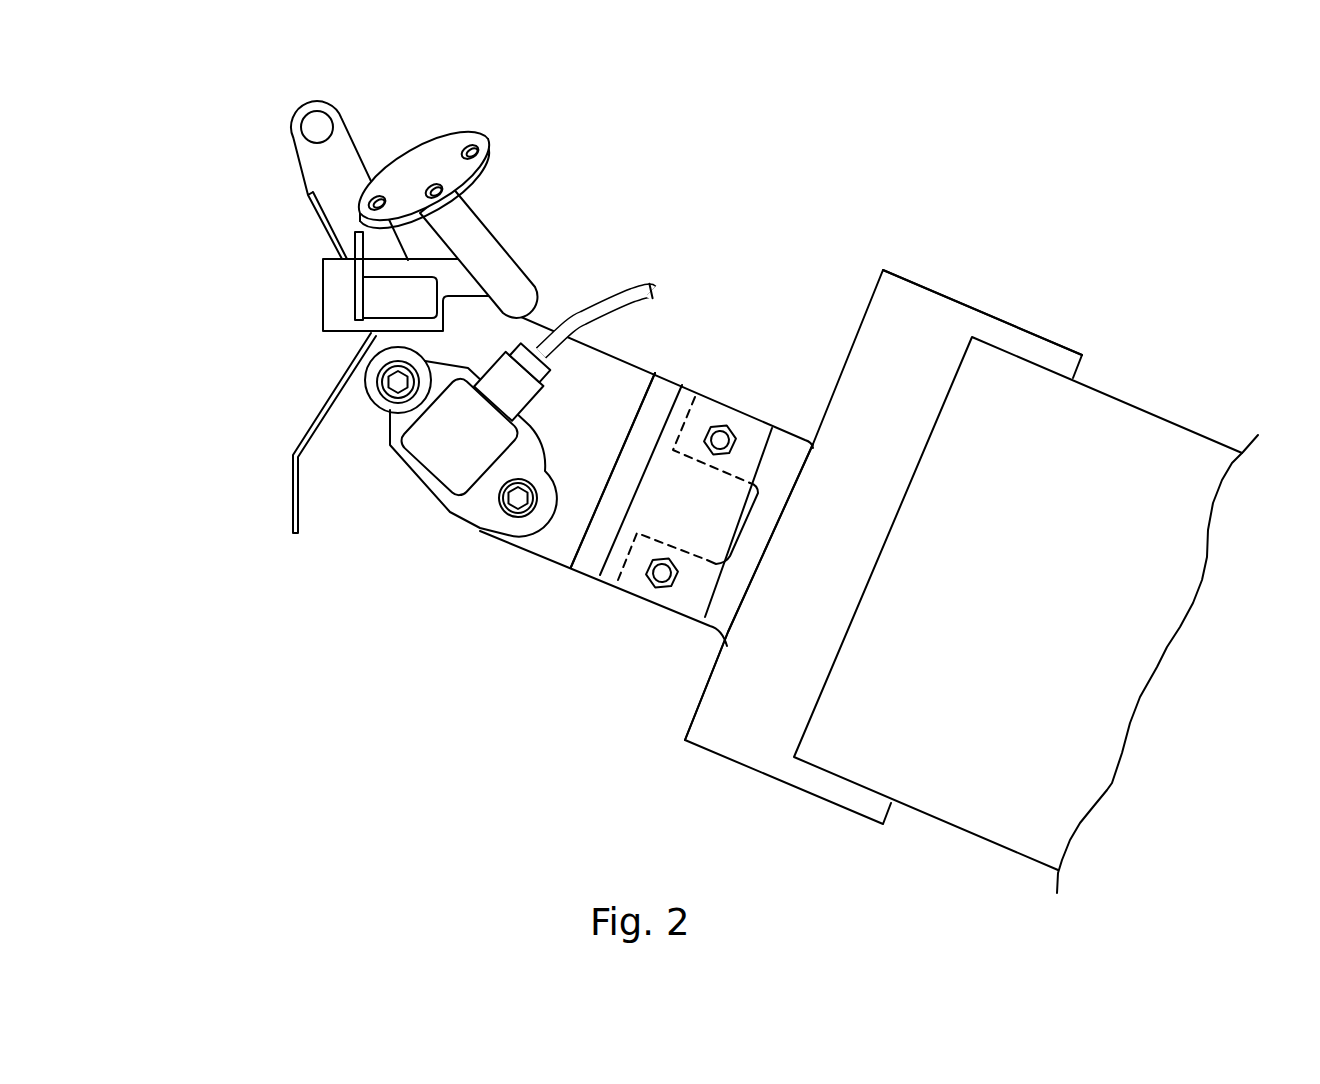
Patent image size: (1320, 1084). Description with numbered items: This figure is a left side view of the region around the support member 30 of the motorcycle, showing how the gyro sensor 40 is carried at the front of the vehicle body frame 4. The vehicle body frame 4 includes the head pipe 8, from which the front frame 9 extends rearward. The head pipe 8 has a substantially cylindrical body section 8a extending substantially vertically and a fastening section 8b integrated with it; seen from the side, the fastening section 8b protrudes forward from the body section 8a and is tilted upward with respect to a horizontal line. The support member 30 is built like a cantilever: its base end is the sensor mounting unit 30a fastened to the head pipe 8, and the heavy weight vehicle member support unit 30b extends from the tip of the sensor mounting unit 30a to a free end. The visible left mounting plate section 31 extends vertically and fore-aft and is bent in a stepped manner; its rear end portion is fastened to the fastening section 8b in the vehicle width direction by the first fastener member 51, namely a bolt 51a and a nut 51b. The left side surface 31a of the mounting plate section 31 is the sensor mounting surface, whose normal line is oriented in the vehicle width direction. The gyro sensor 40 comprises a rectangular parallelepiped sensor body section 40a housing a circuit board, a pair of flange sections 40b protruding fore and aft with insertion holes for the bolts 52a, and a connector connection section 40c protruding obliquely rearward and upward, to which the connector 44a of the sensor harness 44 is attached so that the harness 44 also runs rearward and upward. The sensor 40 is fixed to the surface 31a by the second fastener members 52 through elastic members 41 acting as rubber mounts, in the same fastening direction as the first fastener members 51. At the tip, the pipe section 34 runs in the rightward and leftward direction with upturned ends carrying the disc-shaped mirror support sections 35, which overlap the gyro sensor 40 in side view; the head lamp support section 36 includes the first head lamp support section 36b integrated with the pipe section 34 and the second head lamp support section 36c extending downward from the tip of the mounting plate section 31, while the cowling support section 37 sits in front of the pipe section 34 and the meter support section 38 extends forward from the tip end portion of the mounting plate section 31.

The vehicle body frame 4 is at (1205, 428).
The head pipe 8 is at (1007, 322).
The body section 8a is at (913, 317).
The fastening section 8b is at (710, 627).
The front frame 9 is at (1103, 443).
The support member 30 is at (487, 408).
The sensor mounting unit 30a is at (654, 501).
The heavy weight vehicle member support unit 30b is at (338, 357).
The mounting plate section 31 is at (646, 475).
The left side surface 31a is at (550, 400).
The pipe section 34 is at (497, 255).
The mirror support section 35 is at (400, 185).
The head lamp support section 36 is at (340, 295).
The first head lamp support section 36b is at (335, 291).
The second head lamp support section 36c is at (292, 540).
The cowling support section 37 is at (355, 237).
The meter support section 38 is at (292, 120).
The gyro sensor 40 is at (476, 453).
The sensor body section 40a is at (408, 464).
The flange section 40b is at (392, 418).
The connector connection section 40c is at (625, 380).
The elastic member 41 is at (370, 383).
The sensor harness 44 is at (588, 291).
The connector 44a is at (583, 305).
The first fastener member 51 is at (693, 501).
The bolt 51a is at (657, 587).
The nut 51b is at (665, 590).
The second fastener member 52 is at (392, 497).
The bolt 52a is at (518, 498).